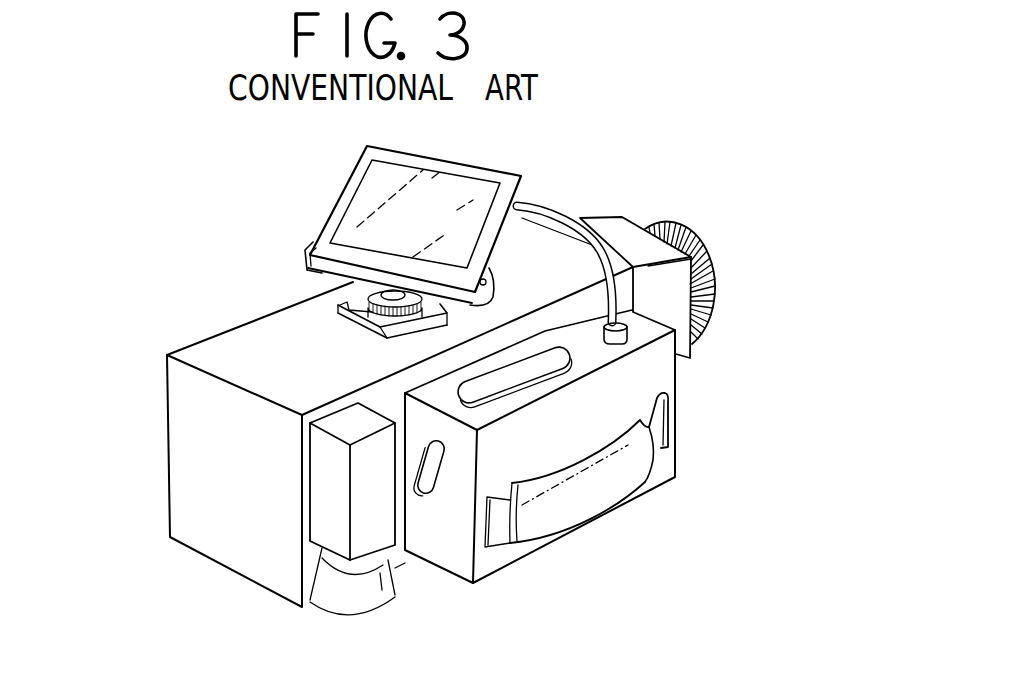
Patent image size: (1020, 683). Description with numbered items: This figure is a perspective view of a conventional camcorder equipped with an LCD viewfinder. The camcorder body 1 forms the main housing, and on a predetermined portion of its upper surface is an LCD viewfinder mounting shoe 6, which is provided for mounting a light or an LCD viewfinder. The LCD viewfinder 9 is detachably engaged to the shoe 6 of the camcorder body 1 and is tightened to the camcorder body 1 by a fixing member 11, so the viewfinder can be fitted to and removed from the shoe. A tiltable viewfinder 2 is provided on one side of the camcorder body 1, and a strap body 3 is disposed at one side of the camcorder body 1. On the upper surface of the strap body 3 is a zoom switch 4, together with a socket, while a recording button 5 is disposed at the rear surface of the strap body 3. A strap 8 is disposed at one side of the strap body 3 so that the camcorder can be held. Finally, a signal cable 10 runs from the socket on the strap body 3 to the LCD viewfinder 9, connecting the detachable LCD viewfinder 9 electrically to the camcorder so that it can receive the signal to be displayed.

The camcorder body 1 is at (200, 412).
The tiltable viewfinder 2 is at (330, 505).
The strap body 3 is at (643, 383).
The zoom switch 4 is at (518, 377).
The recording button 5 is at (423, 495).
The LCD viewfinder mounting shoe 6 is at (345, 321).
The strap 8 is at (625, 473).
The LCD viewfinder 9 is at (520, 200).
The signal cable 10 is at (615, 218).
The fixing member 11 is at (353, 280).